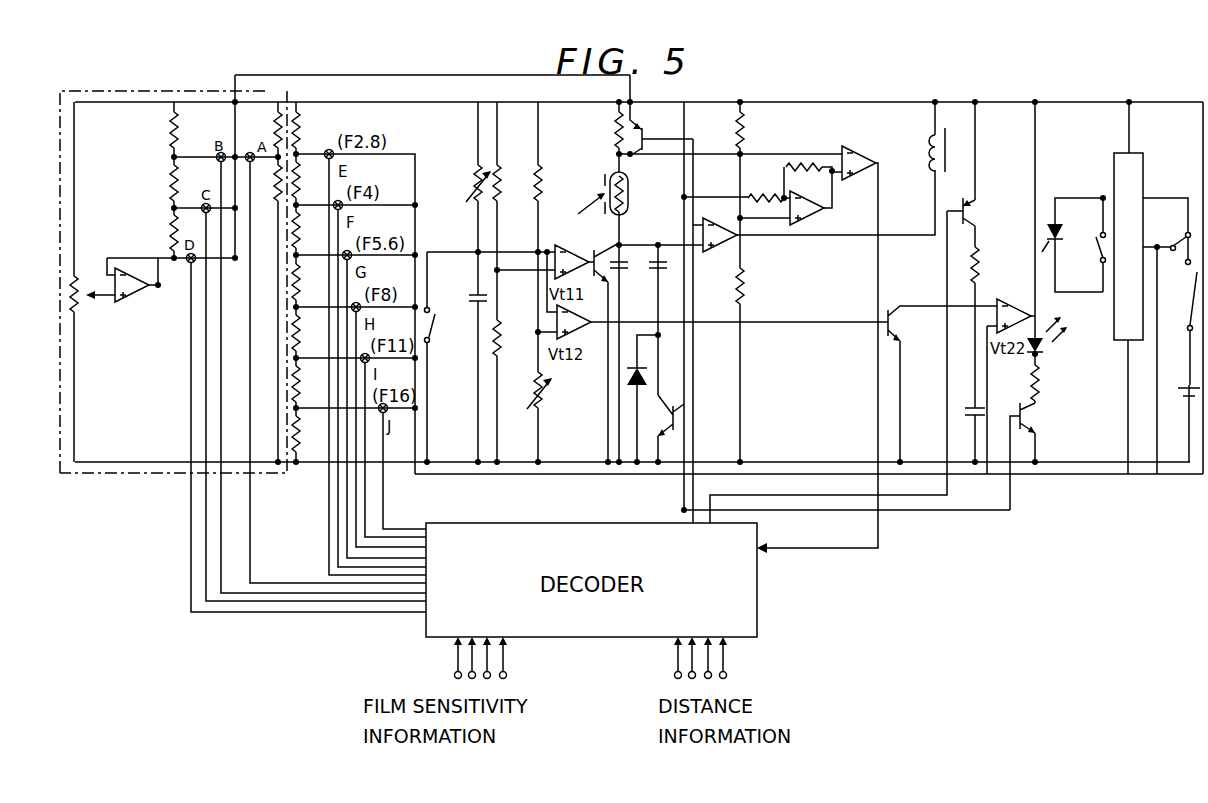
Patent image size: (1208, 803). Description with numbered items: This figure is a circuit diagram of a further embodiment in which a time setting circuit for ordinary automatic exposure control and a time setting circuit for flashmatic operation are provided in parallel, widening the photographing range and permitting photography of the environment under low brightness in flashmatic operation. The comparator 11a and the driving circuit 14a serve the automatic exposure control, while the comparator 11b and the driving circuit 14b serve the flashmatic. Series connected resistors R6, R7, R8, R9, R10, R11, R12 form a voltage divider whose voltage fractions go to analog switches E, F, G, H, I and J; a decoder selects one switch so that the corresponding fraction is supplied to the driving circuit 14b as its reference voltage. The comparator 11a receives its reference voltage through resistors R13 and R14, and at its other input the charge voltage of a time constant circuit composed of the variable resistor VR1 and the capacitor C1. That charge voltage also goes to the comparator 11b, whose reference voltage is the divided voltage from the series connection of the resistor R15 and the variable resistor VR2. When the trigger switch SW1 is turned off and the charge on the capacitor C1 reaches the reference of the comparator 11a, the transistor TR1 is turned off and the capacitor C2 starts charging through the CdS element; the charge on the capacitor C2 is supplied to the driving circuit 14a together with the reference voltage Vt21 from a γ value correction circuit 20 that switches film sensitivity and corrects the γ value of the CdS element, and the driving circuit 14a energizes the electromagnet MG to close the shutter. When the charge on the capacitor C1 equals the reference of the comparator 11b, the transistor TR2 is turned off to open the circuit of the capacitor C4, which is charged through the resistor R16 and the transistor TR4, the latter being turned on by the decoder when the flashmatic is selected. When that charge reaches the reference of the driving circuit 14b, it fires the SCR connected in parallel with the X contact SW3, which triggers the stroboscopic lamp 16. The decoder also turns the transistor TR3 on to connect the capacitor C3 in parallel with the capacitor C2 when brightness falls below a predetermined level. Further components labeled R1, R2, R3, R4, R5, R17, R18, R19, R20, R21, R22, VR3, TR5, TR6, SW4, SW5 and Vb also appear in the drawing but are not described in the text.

The γ value correction circuit 20 is at (107, 91).
The stroboscopic lamp 16 is at (1143, 154).
The comparator 11a is at (564, 250).
The comparator 11b is at (722, 330).
The driving circuit 14a is at (823, 345).
The driving circuit 14b is at (1011, 378).
The resistor R1 is at (160, 129).
The resistor R2 is at (160, 182).
The resistor R3 is at (160, 233).
The resistor R4 is at (265, 129).
The resistor R5 is at (267, 309).
The resister R6 is at (307, 128).
The resister R7 is at (307, 179).
The resister R8 is at (307, 230).
The resister R9 is at (307, 281).
The resister R10 is at (311, 332).
The resister R11 is at (311, 383).
The resister R12 is at (311, 435).
The resister R13 is at (512, 211).
The resister R14 is at (513, 391).
The resister R15 is at (553, 237).
The resister R16 is at (992, 327).
The resistor R17 is at (602, 137).
The resistor R18 is at (757, 185).
The resistor R19 is at (757, 365).
The resistor R20 is at (766, 189).
The resistor R21 is at (791, 194).
The resistor R22 is at (1052, 384).
The variable resister VR1 is at (464, 198).
The variable resister VR2 is at (552, 417).
The variable resistor VR3 is at (95, 303).
The capacitor C1 is at (466, 375).
The capacitor C2 is at (626, 353).
The capacitor C3 is at (665, 320).
The capacitor C4 is at (966, 425).
The transistor TR1 is at (595, 349).
The transistor TR2 is at (942, 384).
The transistor TR3 is at (674, 426).
The transistor TR4 is at (861, 312).
The transistor TR5 is at (666, 312).
The transistor TR6 is at (1040, 456).
The trigger switch SW1 is at (446, 357).
The X contact SW3 is at (1082, 245).
The switch SW4 is at (1167, 336).
The switch SW5 is at (1177, 311).
The element SCR is at (1072, 245).
The electromagnet MG is at (947, 137).
The CdS element CdS is at (620, 208).
The reference voltage Vt21 is at (817, 226).
The battery Vb is at (1181, 423).